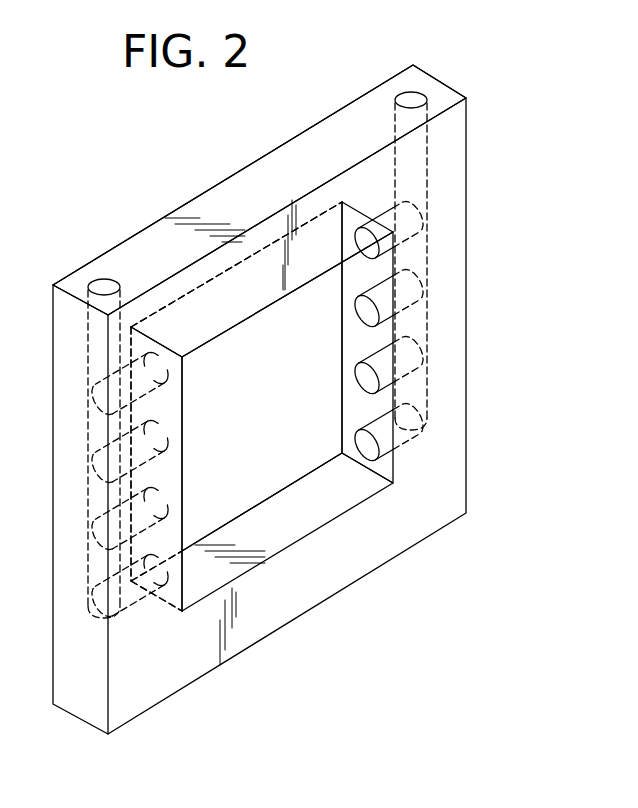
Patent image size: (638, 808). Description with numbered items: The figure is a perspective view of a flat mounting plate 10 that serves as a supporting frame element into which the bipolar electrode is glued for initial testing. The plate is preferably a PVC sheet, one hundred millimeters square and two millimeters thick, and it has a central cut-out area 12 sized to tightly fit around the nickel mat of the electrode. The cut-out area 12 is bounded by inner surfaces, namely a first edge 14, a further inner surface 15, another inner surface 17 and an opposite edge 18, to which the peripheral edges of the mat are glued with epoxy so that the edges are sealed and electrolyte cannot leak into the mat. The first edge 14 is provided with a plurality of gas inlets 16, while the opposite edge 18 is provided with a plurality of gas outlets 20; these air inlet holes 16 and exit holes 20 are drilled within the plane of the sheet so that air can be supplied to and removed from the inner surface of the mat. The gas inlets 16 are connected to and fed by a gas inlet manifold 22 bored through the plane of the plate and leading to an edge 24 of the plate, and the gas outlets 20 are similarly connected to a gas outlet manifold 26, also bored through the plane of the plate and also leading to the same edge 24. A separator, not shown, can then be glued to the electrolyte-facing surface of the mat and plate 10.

The mounting plate 10 is at (476, 353).
The central cut-out area 12 is at (285, 447).
The first edge of the cut-out area 14 is at (182, 497).
The inner surface of the cut-out area 15 is at (258, 313).
The gas inlets 16 is at (165, 433).
The inner surface of the cut-out area 17 is at (320, 520).
The opposite edge of the cut-out area 18 is at (394, 464).
The gas outlets 20 is at (352, 383).
The gas inlet manifold 22 is at (100, 282).
The edge of the plate 24 is at (238, 186).
The gas outlet manifold 26 is at (413, 98).